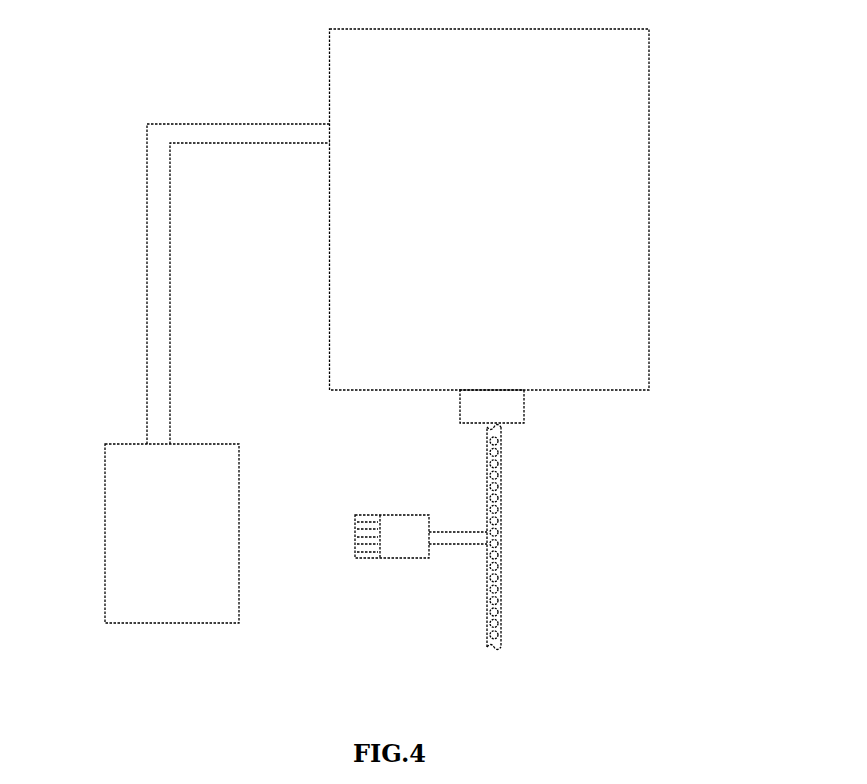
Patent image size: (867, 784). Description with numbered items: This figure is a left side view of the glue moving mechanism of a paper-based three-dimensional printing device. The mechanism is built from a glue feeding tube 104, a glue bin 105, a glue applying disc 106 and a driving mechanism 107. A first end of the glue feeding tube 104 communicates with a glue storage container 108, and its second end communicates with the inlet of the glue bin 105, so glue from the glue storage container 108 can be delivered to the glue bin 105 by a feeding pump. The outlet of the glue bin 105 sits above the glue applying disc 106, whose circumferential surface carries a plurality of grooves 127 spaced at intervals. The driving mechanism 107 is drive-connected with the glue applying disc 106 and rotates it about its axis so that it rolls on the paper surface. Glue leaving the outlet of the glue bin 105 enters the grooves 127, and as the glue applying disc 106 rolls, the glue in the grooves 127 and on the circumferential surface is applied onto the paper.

The glue feeding tube 104 is at (159, 245).
The glue bin 105 is at (602, 195).
The glue applying disc 106 is at (502, 603).
The driving mechanism 107 is at (402, 545).
The glue storage container 108 is at (135, 548).
The groove 127 is at (493, 578).